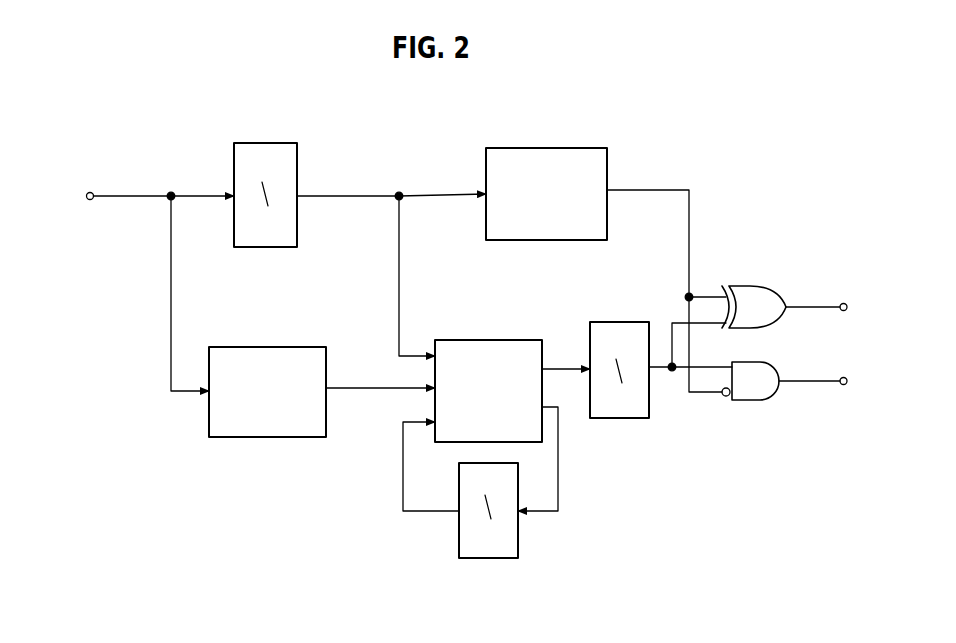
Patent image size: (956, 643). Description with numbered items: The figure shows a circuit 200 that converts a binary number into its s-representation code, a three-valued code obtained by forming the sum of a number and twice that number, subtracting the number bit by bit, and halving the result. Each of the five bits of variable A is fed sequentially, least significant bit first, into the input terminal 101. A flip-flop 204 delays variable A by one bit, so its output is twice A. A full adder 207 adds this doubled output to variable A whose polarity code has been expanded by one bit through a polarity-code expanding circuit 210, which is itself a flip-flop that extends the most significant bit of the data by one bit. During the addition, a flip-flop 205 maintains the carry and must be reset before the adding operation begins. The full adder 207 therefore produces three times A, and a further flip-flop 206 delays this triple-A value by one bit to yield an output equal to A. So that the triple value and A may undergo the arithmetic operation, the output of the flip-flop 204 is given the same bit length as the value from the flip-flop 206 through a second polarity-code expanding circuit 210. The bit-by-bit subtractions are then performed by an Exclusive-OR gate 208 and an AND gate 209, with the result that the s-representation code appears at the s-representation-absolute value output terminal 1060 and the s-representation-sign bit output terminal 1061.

The input terminal 101 is at (86, 197).
The circuit 200 is at (808, 212).
The flip-flop 204 is at (253, 143).
The flip-flop 205 is at (505, 558).
The flip-flop 206 is at (629, 322).
The full adder 207 is at (497, 340).
The Exclusive-OR gate 208 is at (773, 288).
The AND gate 209 is at (782, 364).
The polarity-code expanding circuit 210 is at (514, 146).
The s-representation-absolute value output terminal 1060 is at (847, 305).
The s-representation-sign bit output terminal 1061 is at (847, 379).